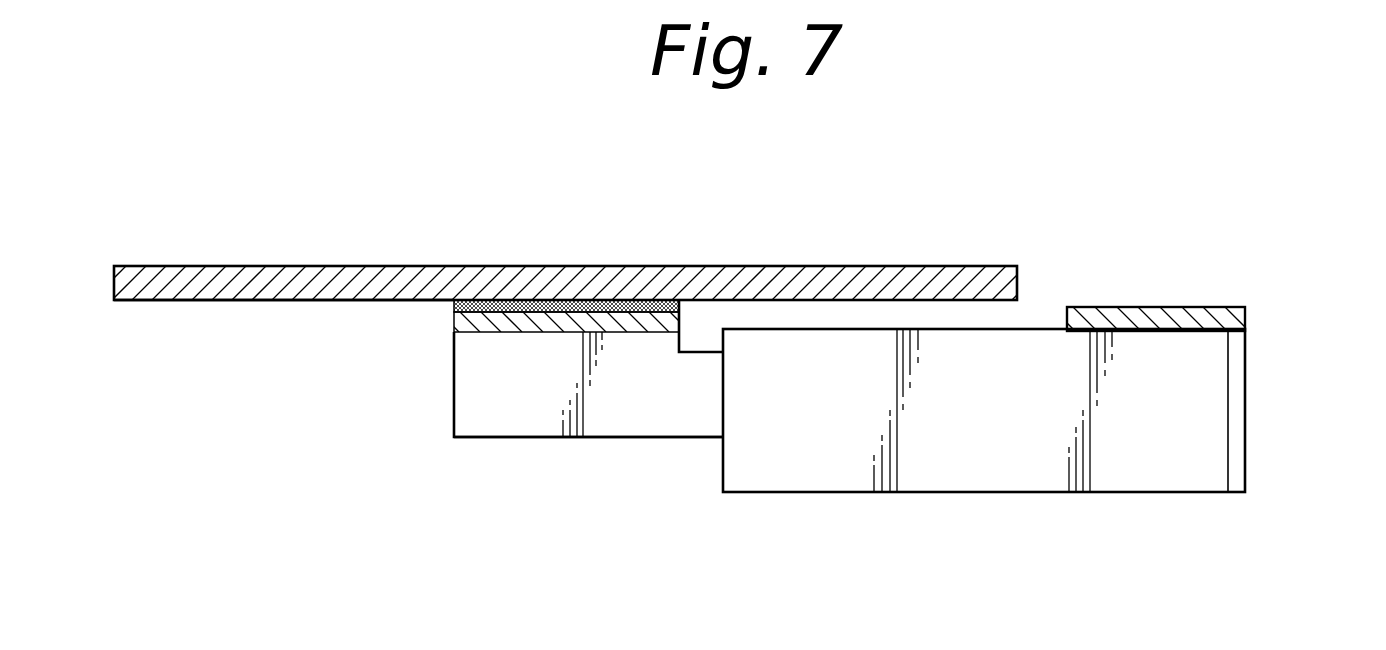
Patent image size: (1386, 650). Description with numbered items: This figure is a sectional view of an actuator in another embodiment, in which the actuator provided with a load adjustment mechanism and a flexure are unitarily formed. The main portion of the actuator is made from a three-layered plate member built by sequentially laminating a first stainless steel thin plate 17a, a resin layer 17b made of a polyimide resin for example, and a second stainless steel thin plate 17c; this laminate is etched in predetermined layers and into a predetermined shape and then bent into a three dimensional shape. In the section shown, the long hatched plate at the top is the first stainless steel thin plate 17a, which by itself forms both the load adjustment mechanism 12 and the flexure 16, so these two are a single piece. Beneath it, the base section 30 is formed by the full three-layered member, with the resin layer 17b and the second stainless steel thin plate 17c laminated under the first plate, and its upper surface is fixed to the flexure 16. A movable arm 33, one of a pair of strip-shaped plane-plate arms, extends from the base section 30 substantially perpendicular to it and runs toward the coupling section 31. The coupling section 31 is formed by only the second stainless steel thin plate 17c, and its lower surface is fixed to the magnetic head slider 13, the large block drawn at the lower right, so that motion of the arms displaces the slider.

The load adjustment mechanism 12 is at (820, 276).
The flexure 16 is at (266, 274).
The first stainless steel thin plate 17a is at (320, 299).
The resin layer 17b is at (450, 306).
The second stainless steel thin plate 17c is at (456, 322).
The coupling section 31 is at (1137, 318).
The base section 30 is at (542, 372).
The movable arm 33 is at (613, 420).
The magnetic head slider 13 is at (992, 463).